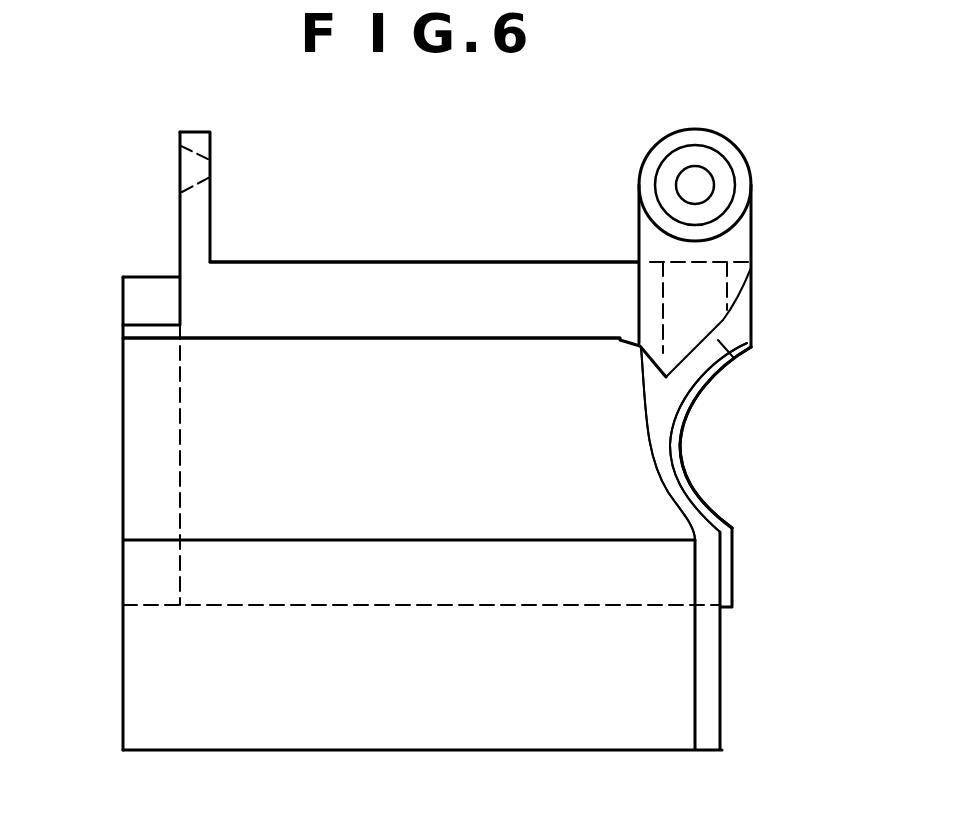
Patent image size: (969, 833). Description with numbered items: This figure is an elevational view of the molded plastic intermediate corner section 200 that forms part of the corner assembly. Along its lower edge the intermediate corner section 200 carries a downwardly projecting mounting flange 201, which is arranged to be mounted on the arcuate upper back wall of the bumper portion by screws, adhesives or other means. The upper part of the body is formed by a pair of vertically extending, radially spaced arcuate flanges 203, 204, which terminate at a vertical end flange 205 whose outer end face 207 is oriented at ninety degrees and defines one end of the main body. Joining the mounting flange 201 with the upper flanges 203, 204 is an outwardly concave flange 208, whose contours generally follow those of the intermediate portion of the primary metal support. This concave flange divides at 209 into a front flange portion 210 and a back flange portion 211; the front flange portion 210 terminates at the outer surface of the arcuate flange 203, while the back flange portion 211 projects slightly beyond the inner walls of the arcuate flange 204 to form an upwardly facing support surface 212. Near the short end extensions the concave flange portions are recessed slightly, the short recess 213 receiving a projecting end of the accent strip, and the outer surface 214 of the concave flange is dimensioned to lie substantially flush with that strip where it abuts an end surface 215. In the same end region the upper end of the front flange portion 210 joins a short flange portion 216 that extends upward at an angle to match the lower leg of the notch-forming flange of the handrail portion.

The intermediate corner section 200 is at (415, 457).
The mounting flange 201 is at (405, 710).
The arcuate flange 203 is at (738, 258).
The arcuate flange 204 is at (338, 282).
The vertical end flange 205 is at (210, 187).
The outer end face 207 is at (180, 220).
The outwardly concave flange 208 is at (667, 487).
The division point 209 is at (660, 400).
The front flange portion 210 is at (735, 355).
The back flange portion 211 is at (648, 389).
The upwardly facing support surface 212 is at (643, 382).
The short recess 213 is at (673, 473).
The outer surface of the concave flange 214 is at (680, 417).
The end surface 215 is at (180, 425).
The short flange portion 216 is at (735, 318).